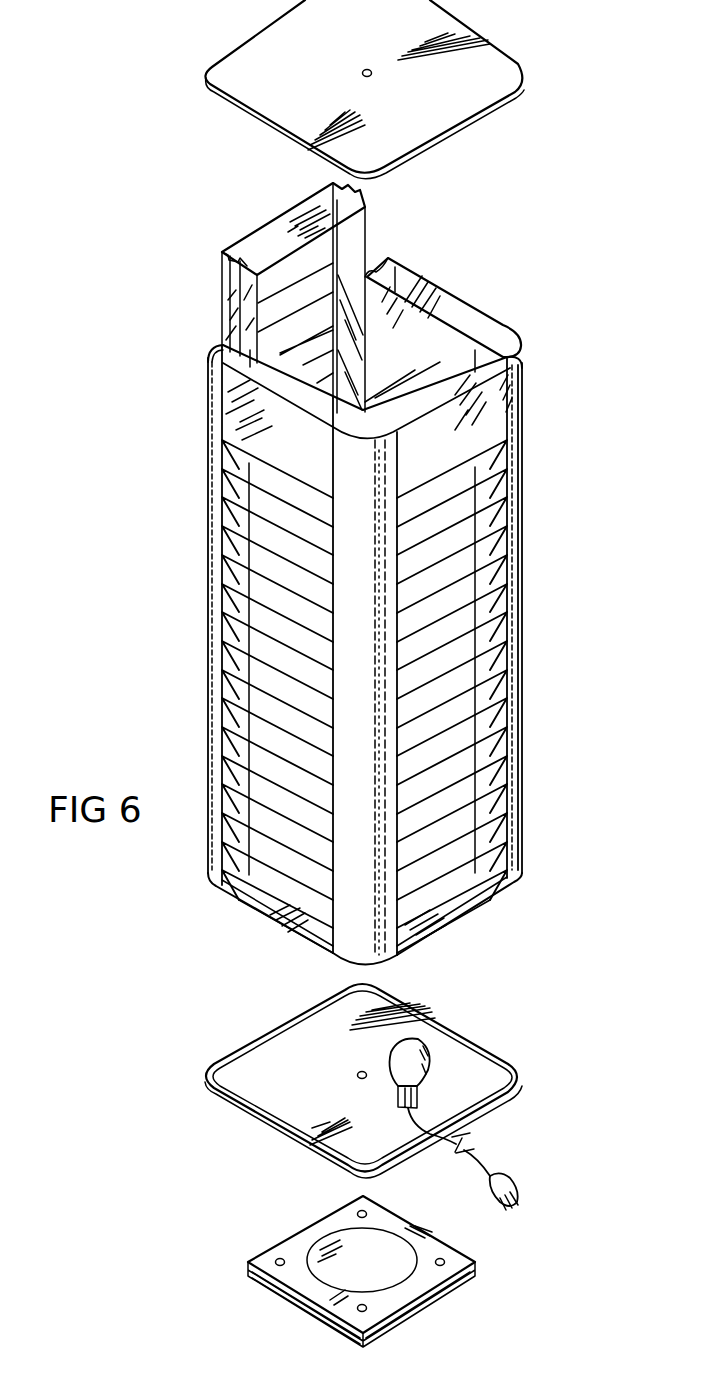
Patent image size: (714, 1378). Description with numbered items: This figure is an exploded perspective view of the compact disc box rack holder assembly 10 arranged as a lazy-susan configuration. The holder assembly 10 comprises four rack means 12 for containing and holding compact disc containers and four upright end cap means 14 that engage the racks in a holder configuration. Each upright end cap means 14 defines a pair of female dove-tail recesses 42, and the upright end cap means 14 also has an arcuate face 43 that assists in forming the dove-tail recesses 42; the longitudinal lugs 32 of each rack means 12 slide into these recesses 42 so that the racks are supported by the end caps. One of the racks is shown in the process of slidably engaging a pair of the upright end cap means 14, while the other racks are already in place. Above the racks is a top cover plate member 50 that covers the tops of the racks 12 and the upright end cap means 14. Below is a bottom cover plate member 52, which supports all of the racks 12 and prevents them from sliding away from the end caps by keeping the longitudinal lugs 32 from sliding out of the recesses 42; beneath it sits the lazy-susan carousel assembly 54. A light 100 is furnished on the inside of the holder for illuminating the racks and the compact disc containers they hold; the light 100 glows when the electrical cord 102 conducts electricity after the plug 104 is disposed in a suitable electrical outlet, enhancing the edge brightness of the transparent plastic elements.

The compact disc box rack holder assembly 10 is at (545, 594).
The rack means 12 is at (277, 190).
The upright end cap means 14 is at (522, 358).
The longitudinal lugs 32 is at (380, 256).
The female dove-tail recesses 42 is at (378, 270).
The arcuate face 43 is at (522, 833).
The top cover (plate) member 50 is at (497, 88).
The bottom cover (plate) member 52 is at (524, 1081).
The lazy-susan carousel assembly 54 is at (470, 1262).
The light 100 is at (423, 1050).
The electrical cord 102 is at (480, 1157).
The plug 104 is at (518, 1180).